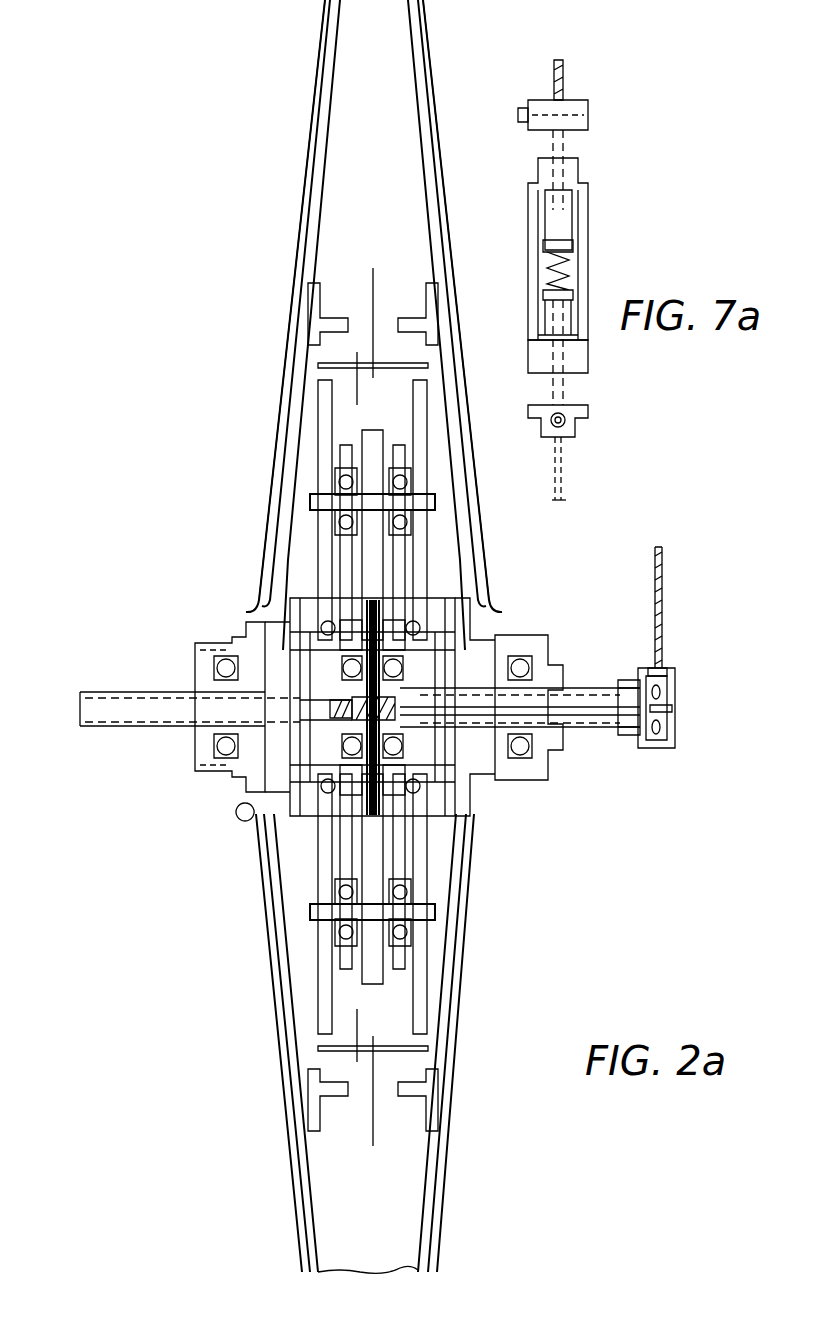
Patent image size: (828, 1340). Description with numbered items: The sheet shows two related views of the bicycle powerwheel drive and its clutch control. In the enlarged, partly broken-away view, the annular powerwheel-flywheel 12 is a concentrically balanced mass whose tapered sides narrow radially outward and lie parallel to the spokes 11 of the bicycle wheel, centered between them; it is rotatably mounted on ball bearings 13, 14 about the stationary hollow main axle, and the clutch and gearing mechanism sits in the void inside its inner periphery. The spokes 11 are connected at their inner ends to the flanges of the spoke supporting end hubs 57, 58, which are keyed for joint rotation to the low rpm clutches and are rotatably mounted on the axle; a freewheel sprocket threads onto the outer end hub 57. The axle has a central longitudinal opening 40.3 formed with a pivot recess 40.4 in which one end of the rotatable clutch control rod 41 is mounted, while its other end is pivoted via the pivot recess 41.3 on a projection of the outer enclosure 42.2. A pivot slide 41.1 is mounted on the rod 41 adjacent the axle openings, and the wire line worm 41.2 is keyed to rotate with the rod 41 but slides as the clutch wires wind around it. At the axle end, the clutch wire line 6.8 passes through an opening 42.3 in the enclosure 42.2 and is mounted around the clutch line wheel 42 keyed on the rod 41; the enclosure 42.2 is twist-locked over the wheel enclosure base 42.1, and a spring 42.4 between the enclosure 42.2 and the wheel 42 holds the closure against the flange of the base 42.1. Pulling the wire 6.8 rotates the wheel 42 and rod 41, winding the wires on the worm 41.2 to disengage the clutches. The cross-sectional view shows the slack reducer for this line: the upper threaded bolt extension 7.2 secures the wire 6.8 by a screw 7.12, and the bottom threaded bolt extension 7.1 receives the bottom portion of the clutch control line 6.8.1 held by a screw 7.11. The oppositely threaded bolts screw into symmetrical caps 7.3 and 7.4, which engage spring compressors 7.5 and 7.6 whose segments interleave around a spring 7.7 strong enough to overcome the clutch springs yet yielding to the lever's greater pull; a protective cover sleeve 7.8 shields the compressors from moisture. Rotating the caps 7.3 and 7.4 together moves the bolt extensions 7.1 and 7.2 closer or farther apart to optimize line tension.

In FIG. 2A, the spokes 11 is at (298, 1247).
In FIG. 2A, the powerwheel-flywheel 12 is at (342, 205).
In FIG. 2A, the ball bearing 13 is at (248, 803).
In FIG. 2A, the ball bearing 14 is at (462, 615).
In FIG. 2A, the spoke supporting end hub 57 is at (203, 643).
In FIG. 2A, the spoke supporting end hub 58 is at (526, 636).
In FIG. 2A, the central longitudinal opening 40.3 is at (335, 703).
In FIG. 2A, the pivot recess 40.4 is at (335, 712).
In FIG. 2A, the clutch control rod 41 is at (570, 712).
In FIG. 2A, the pivot slide 41.1 is at (400, 722).
In FIG. 2A, the wire line worm 41.2 is at (345, 712).
In FIG. 2A, the pivot recess 41.3 is at (660, 740).
In FIG. 2A, the clutch line wheel 42 is at (642, 690).
In FIG. 2A, the wheel enclosure base 42.1 is at (628, 728).
In FIG. 2A, the outer enclosure 42.2 is at (650, 680).
In FIG. 2A, the opening 42.3 is at (652, 667).
In FIG. 2A, the spring 42.4 is at (668, 748).
In FIG. 7A, the clutch wire line 6.8 is at (558, 58).
In FIG. 2A, the bottom portion of the clutch control line 6.8.1 is at (657, 546).
In FIG. 7A, the bottom threaded bolt extension 7.1 is at (575, 437).
In FIG. 7A, the screw 7.11 is at (552, 428).
In FIG. 7A, the screw 7.12 is at (522, 105).
In FIG. 7A, the upper threaded bolt extension 7.2 is at (576, 100).
In FIG. 7A, the cap 7.3 is at (532, 372).
In FIG. 7A, the cap 7.4 is at (542, 165).
In FIG. 7A, the spring compressor 7.5 is at (540, 340).
In FIG. 7A, the spring compressor 7.6 is at (545, 206).
In FIG. 7A, the spring 7.7 is at (543, 288).
In FIG. 7A, the protective cover sleeve 7.8 is at (540, 248).